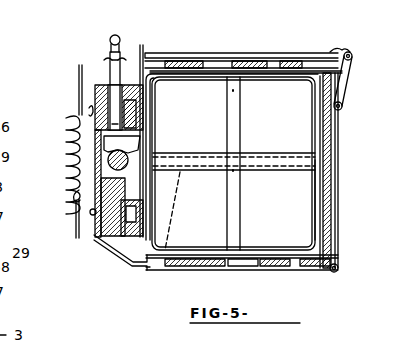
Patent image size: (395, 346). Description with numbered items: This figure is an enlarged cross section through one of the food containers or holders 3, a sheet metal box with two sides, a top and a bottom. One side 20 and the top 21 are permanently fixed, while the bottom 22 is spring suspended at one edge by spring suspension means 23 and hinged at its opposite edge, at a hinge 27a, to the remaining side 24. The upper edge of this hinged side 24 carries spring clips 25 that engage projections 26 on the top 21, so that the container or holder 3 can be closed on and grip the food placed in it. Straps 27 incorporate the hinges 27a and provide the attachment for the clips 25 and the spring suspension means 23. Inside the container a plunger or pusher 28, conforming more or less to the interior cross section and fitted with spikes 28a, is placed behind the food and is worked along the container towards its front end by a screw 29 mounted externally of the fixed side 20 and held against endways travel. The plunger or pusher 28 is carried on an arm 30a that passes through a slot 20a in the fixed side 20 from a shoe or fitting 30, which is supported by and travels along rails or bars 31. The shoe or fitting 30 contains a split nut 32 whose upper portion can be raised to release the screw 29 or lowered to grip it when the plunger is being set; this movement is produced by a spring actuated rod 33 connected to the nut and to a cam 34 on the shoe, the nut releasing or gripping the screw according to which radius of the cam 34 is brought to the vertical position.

The food container or holder 3 is at (255, 270).
The side 20 is at (144, 112).
The slot 20a is at (122, 192).
The top 21 is at (203, 72).
The bottom 22 is at (283, 262).
The spring suspension 23 is at (73, 195).
The side 24 is at (328, 140).
The spring clips 25 is at (341, 108).
The projections 26 is at (344, 51).
The straps 27 is at (337, 168).
The hinge 27a is at (348, 270).
The plunger or pusher 28 is at (236, 136).
The spikes 28a is at (315, 165).
The screw 29 is at (123, 158).
The shoe or fitting 30 is at (93, 100).
The arm 30a is at (200, 265).
The rails or bars 31 is at (141, 55).
The split nut 32 is at (123, 145).
The spring actuated rod 33 is at (113, 82).
The cam 34 is at (113, 50).